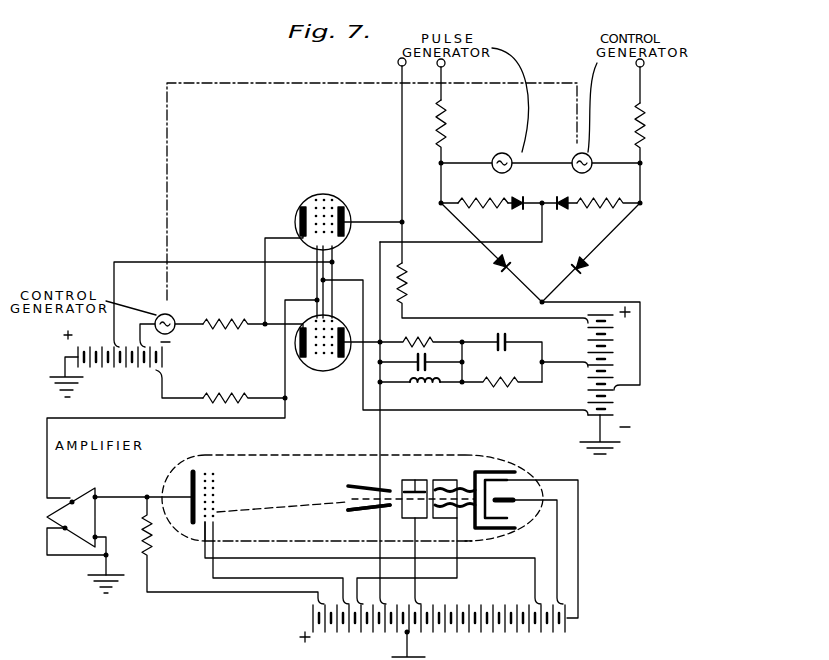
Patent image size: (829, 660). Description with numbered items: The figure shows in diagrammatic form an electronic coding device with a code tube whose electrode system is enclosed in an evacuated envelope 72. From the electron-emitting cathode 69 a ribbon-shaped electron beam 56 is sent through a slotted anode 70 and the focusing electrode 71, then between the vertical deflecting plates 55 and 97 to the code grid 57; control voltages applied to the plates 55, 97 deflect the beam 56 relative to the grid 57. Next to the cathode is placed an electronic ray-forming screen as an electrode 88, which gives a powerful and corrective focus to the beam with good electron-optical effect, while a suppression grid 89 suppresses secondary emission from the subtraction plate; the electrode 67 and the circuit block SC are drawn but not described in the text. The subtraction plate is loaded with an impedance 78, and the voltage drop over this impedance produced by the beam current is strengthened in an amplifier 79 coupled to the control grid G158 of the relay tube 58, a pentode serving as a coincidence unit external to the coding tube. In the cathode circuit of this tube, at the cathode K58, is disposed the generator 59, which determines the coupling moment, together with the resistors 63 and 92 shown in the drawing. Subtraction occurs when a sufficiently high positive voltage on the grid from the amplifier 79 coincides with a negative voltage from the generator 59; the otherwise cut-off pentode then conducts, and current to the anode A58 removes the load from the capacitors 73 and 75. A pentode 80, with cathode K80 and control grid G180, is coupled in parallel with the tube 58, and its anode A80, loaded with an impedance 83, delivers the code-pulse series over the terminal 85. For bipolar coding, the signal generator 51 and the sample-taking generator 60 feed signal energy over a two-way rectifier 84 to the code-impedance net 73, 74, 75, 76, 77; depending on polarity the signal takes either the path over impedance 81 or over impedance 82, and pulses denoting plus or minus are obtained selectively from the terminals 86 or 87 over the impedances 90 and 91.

The scanning circuit SC is at (168, 143).
The terminal 85 is at (399, 65).
The terminal 86 is at (445, 67).
The terminal 87 is at (638, 67).
The impedance 90 is at (447, 112).
The impedance 91 is at (636, 132).
The signal generator 51 is at (494, 152).
The sample-taking generator 60 is at (577, 151).
The impedance 81 is at (483, 182).
The impedance 82 is at (595, 200).
The two-way rectifier 84 is at (516, 198).
The impedance 83 is at (408, 272).
The code-impedance element 76 is at (417, 338).
The capacitor 75 is at (432, 358).
The capacitor 73 is at (508, 337).
The code-impedance element 74 is at (520, 382).
The code-impedance element 77 is at (440, 386).
The pentode 80 is at (352, 217).
The cathode of pentode 80 K80 is at (297, 216).
The anode of pentode 80 A80 is at (340, 200).
The control grid of pentode 80 G180 is at (322, 198).
The relay tube 58 is at (306, 368).
The cathode of relay tube 58 K58 is at (298, 342).
The anode of relay tube 58 A58 is at (348, 355).
The control grid of relay tube 58 G158 is at (312, 322).
The generator 59 is at (169, 313).
The resistor 63 is at (215, 320).
The resistor 92 is at (211, 393).
The amplifier 79 is at (74, 500).
The impedance 78 is at (143, 534).
The cathode electrode 67 is at (191, 470).
The code grid 57 is at (213, 470).
The suppression grid 89 is at (202, 508).
The electron beam 56 is at (255, 508).
The evacuated envelope 72 is at (302, 460).
The vertical deflecting plate 55 is at (363, 486).
The vertical deflecting plate 97 is at (385, 508).
The focusing electrode 71 is at (414, 480).
The slotted anode 70 is at (477, 479).
The ray-forming screen electrode 88 is at (503, 472).
The cathode 69 is at (515, 498).